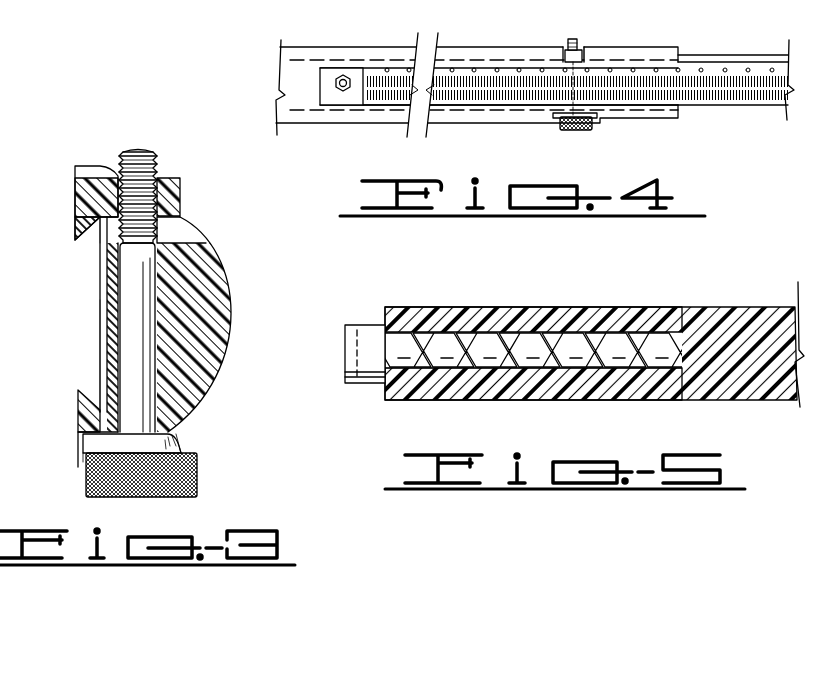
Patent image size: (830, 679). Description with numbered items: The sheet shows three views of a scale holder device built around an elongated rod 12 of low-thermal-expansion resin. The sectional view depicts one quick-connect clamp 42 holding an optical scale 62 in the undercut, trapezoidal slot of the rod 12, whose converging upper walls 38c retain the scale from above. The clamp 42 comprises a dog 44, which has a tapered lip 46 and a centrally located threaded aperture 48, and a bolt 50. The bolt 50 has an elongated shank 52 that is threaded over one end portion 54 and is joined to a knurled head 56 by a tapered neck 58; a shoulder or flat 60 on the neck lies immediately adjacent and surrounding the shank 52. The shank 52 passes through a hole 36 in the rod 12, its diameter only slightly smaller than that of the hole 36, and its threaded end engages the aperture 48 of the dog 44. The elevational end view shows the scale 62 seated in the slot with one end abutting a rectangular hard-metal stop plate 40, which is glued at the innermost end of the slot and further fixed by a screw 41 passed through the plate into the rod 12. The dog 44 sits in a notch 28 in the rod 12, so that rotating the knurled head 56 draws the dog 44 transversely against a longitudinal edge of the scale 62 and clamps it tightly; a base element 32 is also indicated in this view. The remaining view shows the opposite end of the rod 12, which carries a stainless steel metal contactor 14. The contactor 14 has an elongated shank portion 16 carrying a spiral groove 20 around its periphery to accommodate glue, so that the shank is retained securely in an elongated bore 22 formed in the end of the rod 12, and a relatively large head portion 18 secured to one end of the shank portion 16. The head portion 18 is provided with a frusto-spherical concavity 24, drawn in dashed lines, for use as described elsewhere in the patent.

In FIG. 4, the elongated rod 12 is at (316, 50).
In FIG. 5, the elongated rod 12 is at (745, 320).
In FIG. 5, the metal contactor 14 is at (450, 325).
In FIG. 5, the shank portion 16 is at (545, 340).
In FIG. 5, the head portion 18 is at (372, 384).
In FIG. 5, the spiral groove 20 is at (500, 372).
In FIG. 5, the elongated bore 22 is at (586, 382).
In FIG. 5, the frusto-spherical concavity 24 is at (356, 358).
In FIG. 3, the notch 28 is at (180, 226).
In FIG. 4, the notch 28 is at (565, 48).
In FIG. 3, the base plate 32 is at (85, 454).
In FIG. 4, the base plate 32 is at (555, 116).
In FIG. 3, the hole 36 is at (110, 295).
In FIG. 3, the converging upper walls 38c is at (96, 232).
In FIG. 4, the stop plate 40 is at (334, 100).
In FIG. 4, the screw 41 is at (344, 74).
In FIG. 3, the quick-connect clamp 42 is at (164, 157).
In FIG. 3, the dog 44 is at (86, 197).
In FIG. 4, the dog 44 is at (586, 58).
In FIG. 3, the tapered lip 46 is at (79, 231).
In FIG. 3, the threaded aperture 48 is at (160, 194).
In FIG. 3, the bolt 50 is at (179, 446).
In FIG. 3, the shank 52 is at (128, 330).
In FIG. 3, the threaded end portion 54 is at (140, 152).
In FIG. 4, the threaded end portion 54 is at (577, 39).
In FIG. 3, the knurled head 56 is at (198, 477).
In FIG. 4, the knurled head 56 is at (577, 131).
In FIG. 3, the tapered neck 58 is at (115, 437).
In FIG. 3, the shoulder 60 is at (172, 421).
In FIG. 3, the optical scale 62 is at (100, 360).
In FIG. 4, the optical scale 62 is at (708, 58).